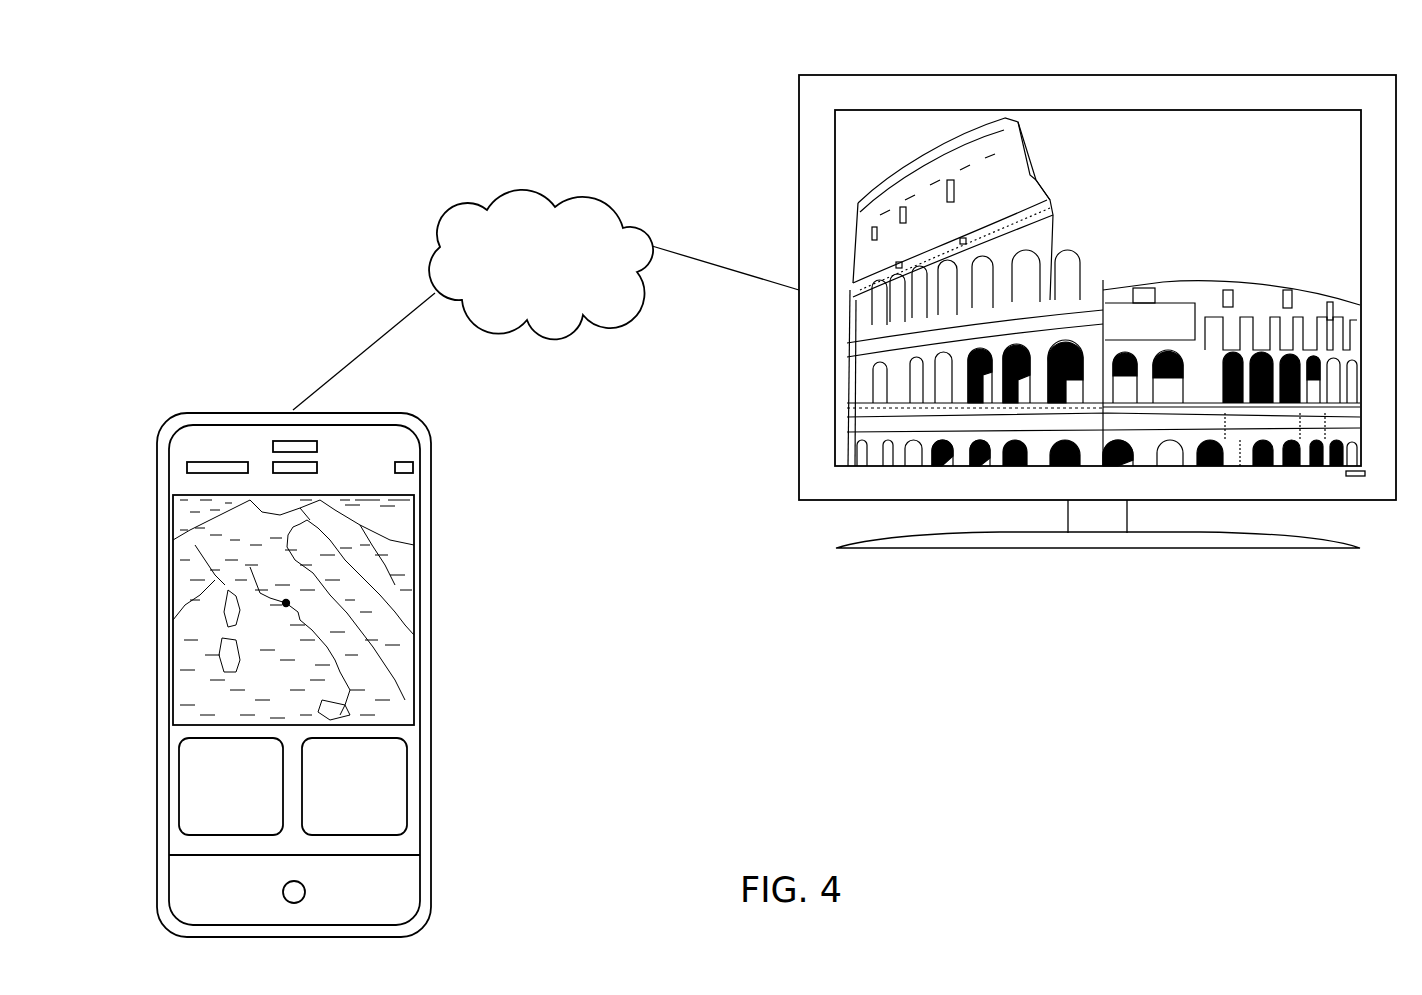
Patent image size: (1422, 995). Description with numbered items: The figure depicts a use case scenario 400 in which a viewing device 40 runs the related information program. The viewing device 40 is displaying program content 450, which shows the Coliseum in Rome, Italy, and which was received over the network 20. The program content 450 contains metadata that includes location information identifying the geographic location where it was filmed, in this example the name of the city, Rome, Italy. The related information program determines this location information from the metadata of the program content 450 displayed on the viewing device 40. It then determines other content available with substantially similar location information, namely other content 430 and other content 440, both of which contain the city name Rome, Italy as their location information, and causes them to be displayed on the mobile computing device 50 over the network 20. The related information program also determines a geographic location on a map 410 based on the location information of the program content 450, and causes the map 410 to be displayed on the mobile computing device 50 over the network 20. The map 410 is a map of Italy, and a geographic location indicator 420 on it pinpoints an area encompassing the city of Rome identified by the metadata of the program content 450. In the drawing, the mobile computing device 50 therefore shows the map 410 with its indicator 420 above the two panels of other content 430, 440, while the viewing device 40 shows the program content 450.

The use case scenario 400 is at (302, 151).
The network 20 is at (533, 190).
The viewing device 40 is at (799, 97).
The mobile computing device 50 is at (232, 413).
The map 410 is at (190, 493).
The geographic location indicator 420 is at (286, 603).
The other content 430 is at (179, 769).
The other content 440 is at (407, 770).
The program content 450 is at (835, 400).